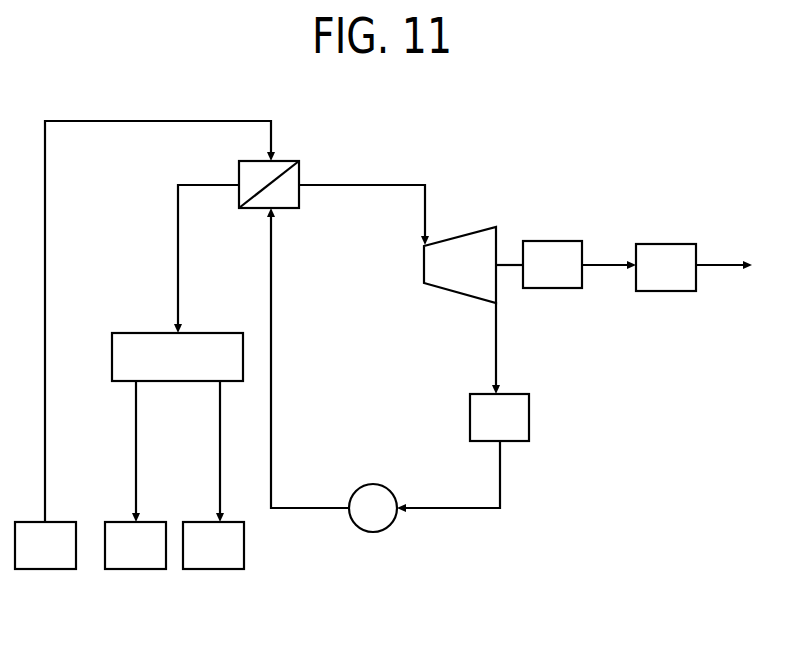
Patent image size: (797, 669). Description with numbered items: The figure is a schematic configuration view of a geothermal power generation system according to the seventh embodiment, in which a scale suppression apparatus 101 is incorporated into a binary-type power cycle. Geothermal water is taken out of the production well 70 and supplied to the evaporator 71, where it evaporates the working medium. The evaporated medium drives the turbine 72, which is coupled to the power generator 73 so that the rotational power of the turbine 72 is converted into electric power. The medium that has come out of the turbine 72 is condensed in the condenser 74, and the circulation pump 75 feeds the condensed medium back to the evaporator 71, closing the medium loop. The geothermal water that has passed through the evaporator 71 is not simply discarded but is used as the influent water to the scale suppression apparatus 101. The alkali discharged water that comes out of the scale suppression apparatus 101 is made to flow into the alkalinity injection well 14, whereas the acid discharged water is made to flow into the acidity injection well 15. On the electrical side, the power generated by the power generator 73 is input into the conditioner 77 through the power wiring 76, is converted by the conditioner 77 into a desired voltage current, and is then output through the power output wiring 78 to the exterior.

The alkalinity injection well 14 is at (213, 570).
The acidity injection well 15 is at (135, 570).
The production well 70 is at (45, 570).
The evaporator 71 is at (287, 210).
The turbine 72 is at (475, 232).
The power generator 73 is at (568, 240).
The condenser 74 is at (513, 442).
The circulation pump 75 is at (373, 533).
The power wiring 76 is at (608, 262).
The conditioner 77 is at (676, 243).
The power output wiring 78 is at (720, 263).
The scale suppression apparatus 101 is at (150, 331).